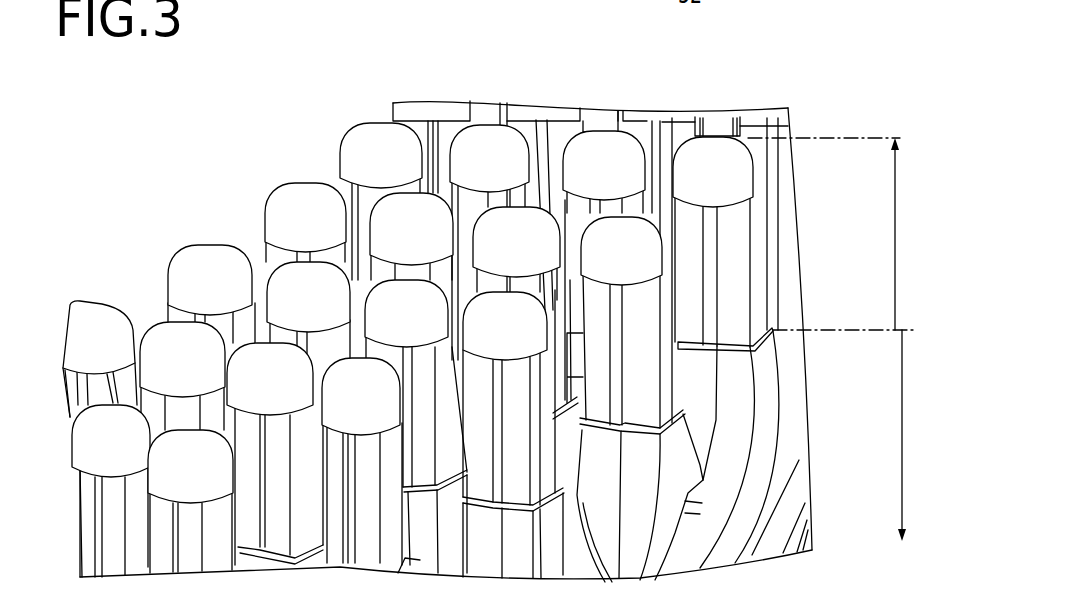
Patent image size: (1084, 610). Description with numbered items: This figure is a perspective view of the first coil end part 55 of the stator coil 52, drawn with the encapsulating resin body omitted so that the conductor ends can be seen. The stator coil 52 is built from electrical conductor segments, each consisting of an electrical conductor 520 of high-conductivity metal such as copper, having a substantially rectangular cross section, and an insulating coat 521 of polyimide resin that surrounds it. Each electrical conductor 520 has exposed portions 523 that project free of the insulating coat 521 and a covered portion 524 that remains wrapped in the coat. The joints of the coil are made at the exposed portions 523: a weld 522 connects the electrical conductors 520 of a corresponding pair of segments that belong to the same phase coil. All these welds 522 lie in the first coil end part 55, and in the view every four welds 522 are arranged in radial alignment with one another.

The stator coil 52 is at (463, 314).
The first coil end part 55 is at (803, 130).
The electrical conductor 520 is at (757, 243).
The insulating coat 521 is at (767, 357).
The weld 522 is at (294, 197).
The exposed portion 523 is at (844, 234).
The covered portion 524 is at (859, 435).